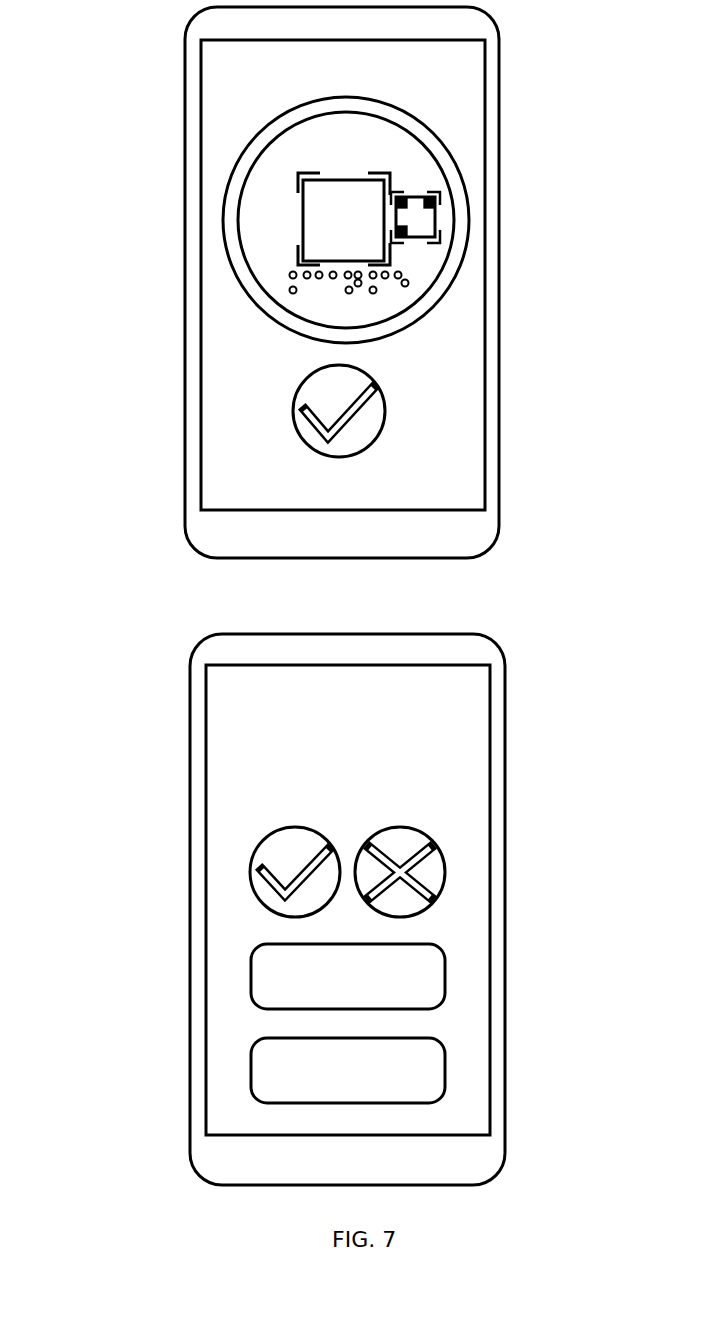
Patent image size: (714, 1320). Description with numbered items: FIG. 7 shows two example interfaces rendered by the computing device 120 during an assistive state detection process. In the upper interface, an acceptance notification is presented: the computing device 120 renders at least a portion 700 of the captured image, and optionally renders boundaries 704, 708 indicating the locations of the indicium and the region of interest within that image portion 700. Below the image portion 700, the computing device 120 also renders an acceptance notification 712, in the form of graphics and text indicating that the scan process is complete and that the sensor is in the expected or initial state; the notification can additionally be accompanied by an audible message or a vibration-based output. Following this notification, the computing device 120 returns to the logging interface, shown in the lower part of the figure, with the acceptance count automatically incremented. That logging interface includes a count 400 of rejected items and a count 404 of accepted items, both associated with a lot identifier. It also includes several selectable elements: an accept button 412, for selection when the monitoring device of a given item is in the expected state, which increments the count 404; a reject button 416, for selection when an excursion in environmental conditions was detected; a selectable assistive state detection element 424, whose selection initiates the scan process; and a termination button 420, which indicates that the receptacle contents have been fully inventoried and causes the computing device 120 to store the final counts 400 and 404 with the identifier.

The computing device 120 is at (172, 478).
The portion of the image 700 is at (223, 225).
The boundaries 704 is at (440, 200).
The boundaries 708 is at (298, 183).
The acceptance notification 712 is at (392, 455).
The count of rejected items 400 is at (263, 718).
The count of accepted items 404 is at (257, 750).
The accept button 412 is at (250, 872).
The reject button 416 is at (447, 870).
The assistive state detection element 424 is at (447, 972).
The termination button 420 is at (447, 1070).